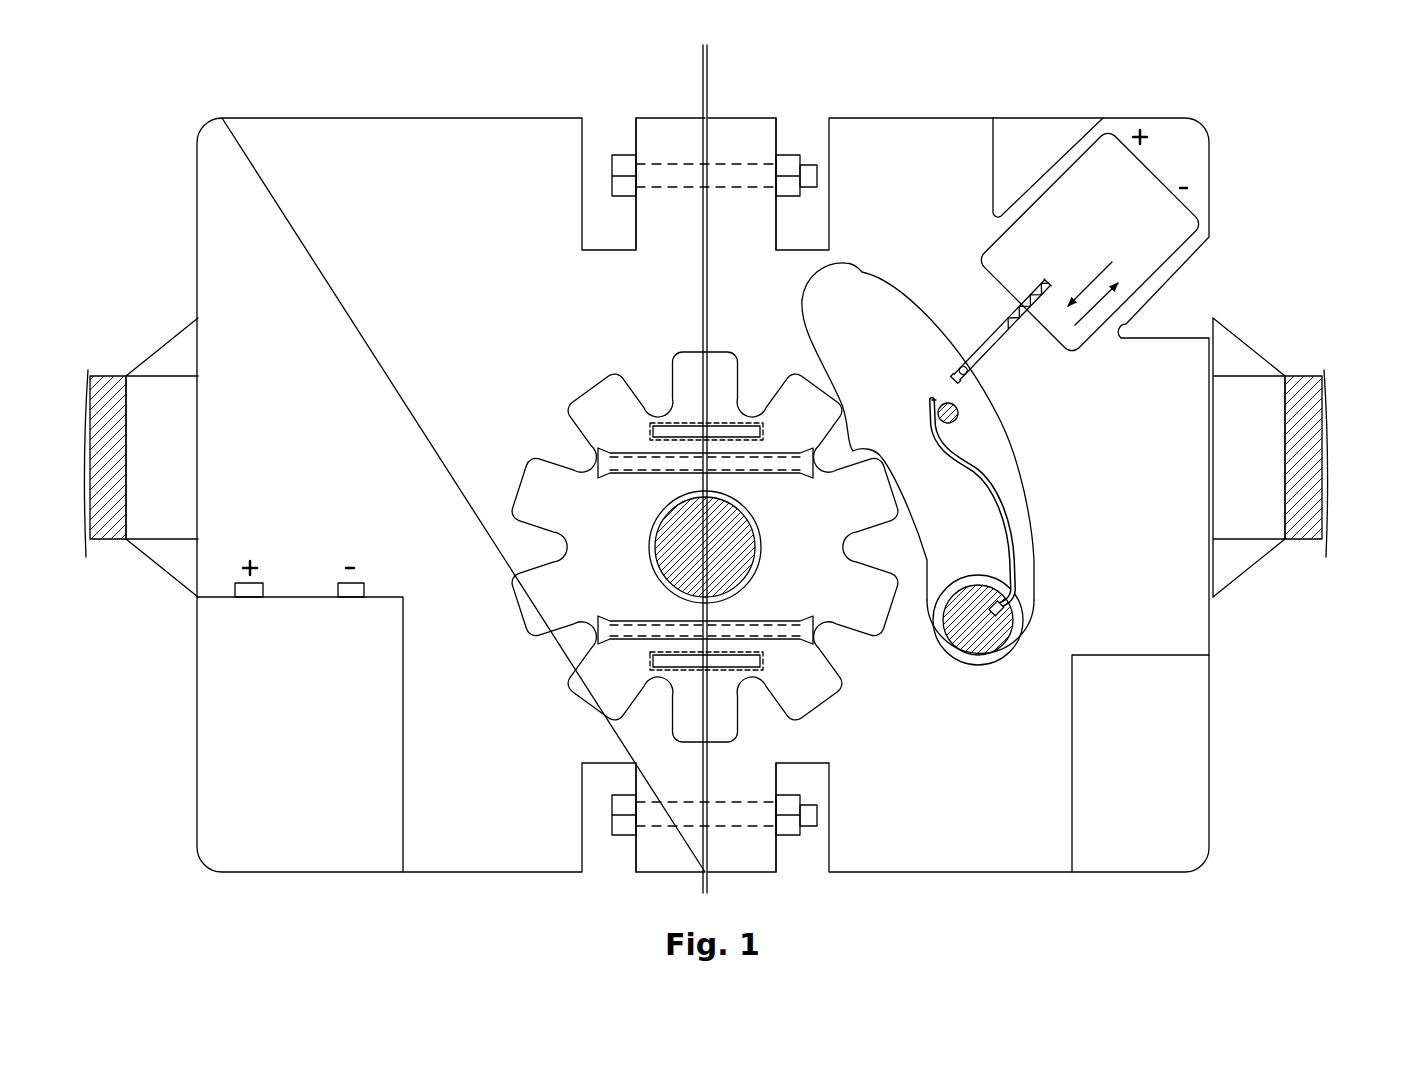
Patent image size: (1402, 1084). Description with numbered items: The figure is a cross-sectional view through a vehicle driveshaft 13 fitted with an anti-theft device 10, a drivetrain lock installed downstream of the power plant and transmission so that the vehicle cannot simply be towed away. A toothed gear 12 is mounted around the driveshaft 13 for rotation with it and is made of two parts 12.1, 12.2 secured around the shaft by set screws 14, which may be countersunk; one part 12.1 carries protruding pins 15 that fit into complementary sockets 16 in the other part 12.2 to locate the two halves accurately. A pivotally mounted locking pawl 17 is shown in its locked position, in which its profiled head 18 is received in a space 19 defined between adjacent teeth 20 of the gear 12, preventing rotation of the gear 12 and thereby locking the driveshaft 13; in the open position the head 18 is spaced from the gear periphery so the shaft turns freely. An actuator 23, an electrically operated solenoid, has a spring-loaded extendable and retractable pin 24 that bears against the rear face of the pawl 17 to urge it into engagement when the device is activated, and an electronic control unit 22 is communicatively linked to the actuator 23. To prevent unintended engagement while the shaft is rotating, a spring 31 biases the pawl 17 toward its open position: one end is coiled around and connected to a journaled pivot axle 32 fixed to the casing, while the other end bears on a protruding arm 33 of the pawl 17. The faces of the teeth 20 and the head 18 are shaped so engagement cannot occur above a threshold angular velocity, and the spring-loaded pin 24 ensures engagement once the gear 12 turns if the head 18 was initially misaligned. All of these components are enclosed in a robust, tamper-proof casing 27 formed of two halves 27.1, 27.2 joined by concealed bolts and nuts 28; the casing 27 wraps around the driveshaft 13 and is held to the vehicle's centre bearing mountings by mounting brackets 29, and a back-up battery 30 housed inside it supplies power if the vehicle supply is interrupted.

The anti-theft device 10 is at (729, 476).
The toothed gear 12 is at (679, 524).
The first gear part 12.1 is at (535, 490).
The second gear part 12.2 is at (862, 620).
The driveshaft 13 is at (740, 518).
The set screws 14 is at (663, 470).
The protruding pins 15 is at (748, 432).
The sockets 16 is at (705, 433).
The locking pawl 17 is at (1015, 458).
The profiled head 18 is at (856, 440).
The space 19 is at (863, 455).
The teeth 20 is at (808, 394).
The electronic control unit 22 is at (1125, 672).
The actuator 23 is at (1101, 156).
The pin 24 is at (980, 342).
The casing 27 is at (1212, 612).
The first casing part 27.1 is at (386, 135).
The second casing part 27.2 is at (951, 135).
The bolts and nuts 28 is at (800, 128).
The mounting brackets 29 is at (105, 382).
The back-up battery 30 is at (380, 666).
The spring 31 is at (1000, 497).
The pivot axle 32 is at (980, 650).
The protruding arm 33 is at (954, 418).